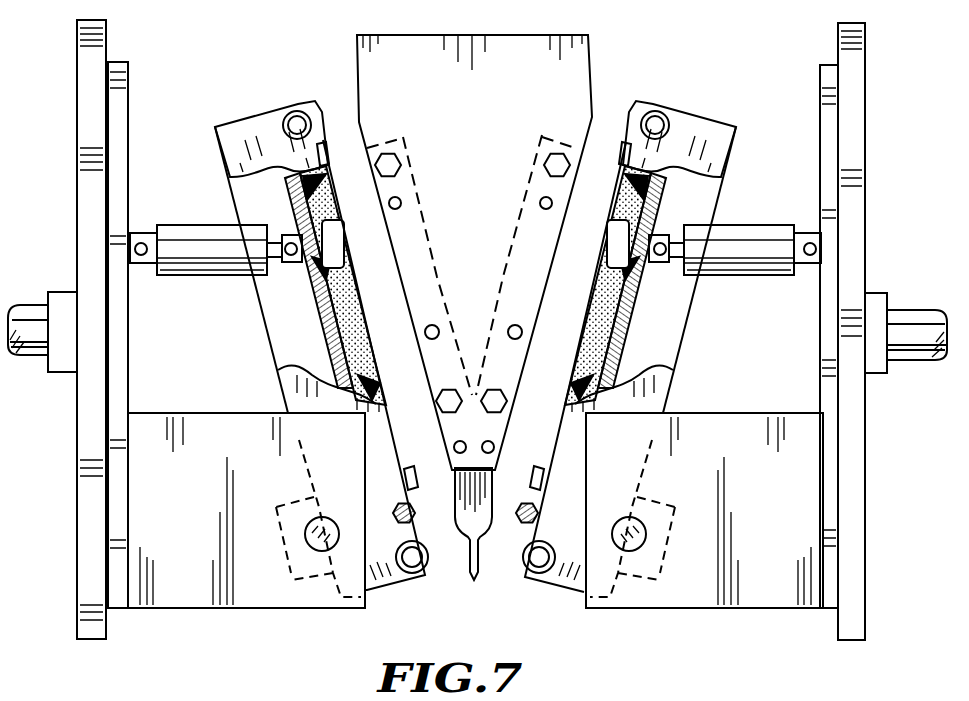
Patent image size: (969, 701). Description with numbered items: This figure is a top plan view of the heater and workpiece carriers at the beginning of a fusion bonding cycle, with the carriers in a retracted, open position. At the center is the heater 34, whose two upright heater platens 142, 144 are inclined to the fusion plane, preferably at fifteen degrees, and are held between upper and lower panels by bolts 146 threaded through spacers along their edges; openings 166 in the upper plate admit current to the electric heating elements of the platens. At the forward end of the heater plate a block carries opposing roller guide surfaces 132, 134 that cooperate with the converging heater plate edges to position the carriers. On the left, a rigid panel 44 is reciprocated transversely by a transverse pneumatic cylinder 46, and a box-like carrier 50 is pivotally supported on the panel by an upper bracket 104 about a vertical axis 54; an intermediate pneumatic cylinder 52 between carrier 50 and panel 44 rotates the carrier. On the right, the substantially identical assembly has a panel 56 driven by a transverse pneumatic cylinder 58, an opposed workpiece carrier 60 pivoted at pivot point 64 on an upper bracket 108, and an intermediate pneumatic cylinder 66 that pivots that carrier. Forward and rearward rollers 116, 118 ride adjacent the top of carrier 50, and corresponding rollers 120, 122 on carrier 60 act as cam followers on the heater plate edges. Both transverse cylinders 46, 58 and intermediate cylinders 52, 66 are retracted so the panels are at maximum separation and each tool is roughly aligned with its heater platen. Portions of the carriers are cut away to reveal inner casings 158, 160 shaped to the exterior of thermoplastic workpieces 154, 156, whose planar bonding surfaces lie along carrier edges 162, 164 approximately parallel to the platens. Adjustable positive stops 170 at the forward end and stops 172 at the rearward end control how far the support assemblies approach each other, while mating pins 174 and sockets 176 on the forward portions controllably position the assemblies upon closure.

The heater 34 is at (590, 45).
The rigid panel 44 is at (80, 108).
The transverse pneumatic cylinder 46 is at (36, 360).
The carrier 50 is at (232, 130).
The intermediate pneumatic cylinder 52 is at (183, 228).
The vertical axis 54 is at (305, 530).
The panel 56 is at (857, 125).
The transverse pneumatic cylinder 58 is at (912, 318).
The opposed workpiece carrier 60 is at (727, 128).
The pivot point 64 is at (645, 515).
The intermediate pneumatic cylinder 66 is at (752, 238).
The upper bracket 104 is at (157, 483).
The upper bracket 108 is at (742, 496).
The forward roller 116 is at (403, 578).
The rearward roller 118 is at (297, 110).
The forward roller 120 is at (545, 578).
The rearward roller 122 is at (660, 110).
The roller guide surface 132 is at (466, 555).
The roller guide surface 134 is at (482, 550).
The heater platen 142 is at (428, 228).
The heater platen 144 is at (528, 272).
The bolts 146 is at (395, 163).
The workpiece 154 is at (345, 305).
The workpiece 156 is at (617, 297).
The inner casing 158 is at (313, 320).
The inner casing 160 is at (675, 322).
The carrier edge 162 is at (307, 114).
The carrier edge 164 is at (624, 145).
The openings 166 is at (510, 328).
The positive stops 170 is at (405, 478).
The positive stops 172 is at (330, 148).
The pins 174 is at (536, 512).
The sockets 176 is at (395, 515).